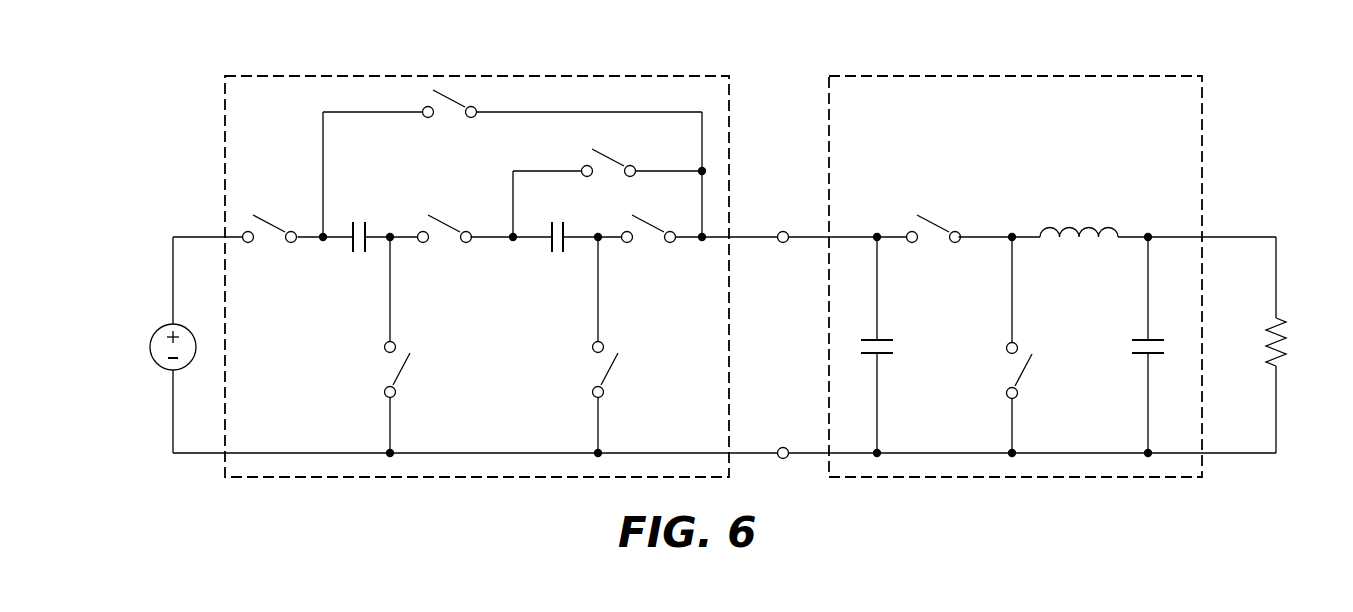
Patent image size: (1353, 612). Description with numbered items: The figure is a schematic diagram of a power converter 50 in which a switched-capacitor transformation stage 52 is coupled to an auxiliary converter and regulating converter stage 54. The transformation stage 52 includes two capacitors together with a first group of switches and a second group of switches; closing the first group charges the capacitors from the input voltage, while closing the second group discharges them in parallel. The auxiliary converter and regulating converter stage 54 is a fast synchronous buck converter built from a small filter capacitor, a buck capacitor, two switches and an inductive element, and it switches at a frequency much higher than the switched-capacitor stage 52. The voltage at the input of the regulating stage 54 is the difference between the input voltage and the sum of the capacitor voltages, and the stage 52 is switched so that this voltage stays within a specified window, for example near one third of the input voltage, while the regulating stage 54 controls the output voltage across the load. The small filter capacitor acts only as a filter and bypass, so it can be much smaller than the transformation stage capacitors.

The power converter 50 is at (1218, 103).
The transformation stage 52 is at (505, 72).
The auxiliary converter and regulating converter stage 54 is at (1130, 74).